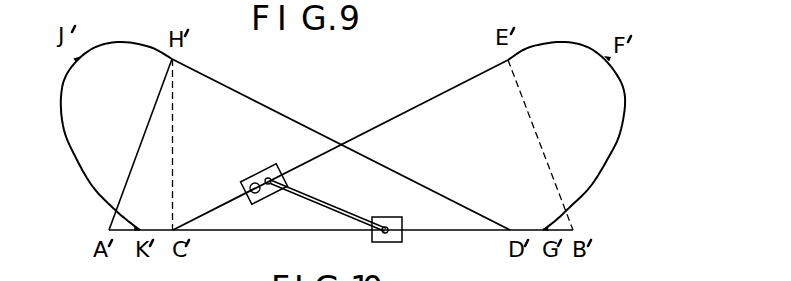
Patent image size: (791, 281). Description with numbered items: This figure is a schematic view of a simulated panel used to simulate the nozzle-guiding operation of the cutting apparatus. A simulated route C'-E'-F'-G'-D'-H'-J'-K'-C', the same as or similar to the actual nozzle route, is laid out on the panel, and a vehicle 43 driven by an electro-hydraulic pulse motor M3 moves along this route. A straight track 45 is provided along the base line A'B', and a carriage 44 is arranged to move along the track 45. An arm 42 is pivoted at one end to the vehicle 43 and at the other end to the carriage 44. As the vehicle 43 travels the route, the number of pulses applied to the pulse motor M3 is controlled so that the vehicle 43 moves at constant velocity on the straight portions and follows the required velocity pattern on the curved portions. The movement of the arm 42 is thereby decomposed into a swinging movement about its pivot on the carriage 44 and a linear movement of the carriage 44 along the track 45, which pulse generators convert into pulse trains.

The arm 42 is at (349, 211).
The vehicle 43 is at (265, 169).
The carriage 44 is at (382, 242).
The straight track 45 is at (277, 232).
The electro-hydraulic pulse motor M3 is at (244, 181).